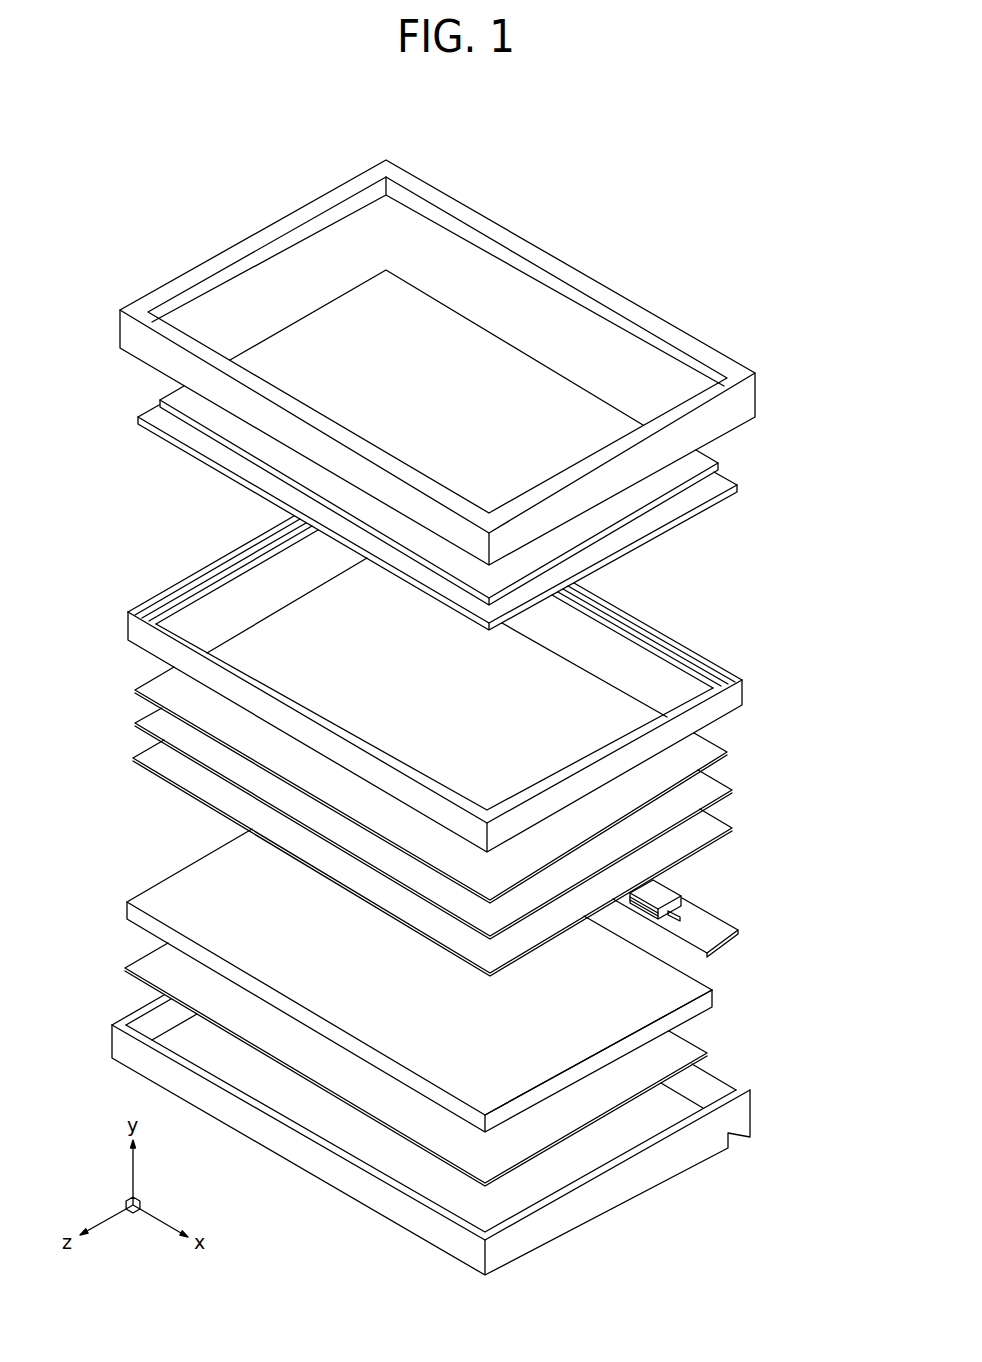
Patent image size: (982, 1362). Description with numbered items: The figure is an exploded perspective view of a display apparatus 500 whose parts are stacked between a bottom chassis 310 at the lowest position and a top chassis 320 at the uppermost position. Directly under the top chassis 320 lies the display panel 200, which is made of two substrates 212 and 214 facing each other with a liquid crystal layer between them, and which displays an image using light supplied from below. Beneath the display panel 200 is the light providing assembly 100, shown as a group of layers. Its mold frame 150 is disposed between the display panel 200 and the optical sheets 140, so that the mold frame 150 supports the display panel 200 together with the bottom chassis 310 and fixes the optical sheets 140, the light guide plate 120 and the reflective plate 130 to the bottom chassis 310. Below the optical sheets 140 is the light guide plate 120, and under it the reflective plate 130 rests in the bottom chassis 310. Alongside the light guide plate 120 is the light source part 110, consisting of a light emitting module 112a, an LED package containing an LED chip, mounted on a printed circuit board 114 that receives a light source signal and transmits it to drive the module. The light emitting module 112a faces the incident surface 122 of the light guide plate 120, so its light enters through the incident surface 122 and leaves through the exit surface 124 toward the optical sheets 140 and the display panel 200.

The display apparatus 500 is at (465, 111).
The top chassis 320 is at (742, 372).
The display panel 200 is at (809, 440).
The substrate 214 is at (702, 458).
The substrate 212 is at (718, 478).
The light providing assembly 100 is at (100, 472).
The mold frame 150 is at (745, 672).
The optical sheets 140 is at (721, 748).
The light source part 110 is at (752, 923).
The light emitting module 112a is at (666, 882).
The printed circuit board 114 is at (717, 932).
The light guide plate 120 is at (727, 1017).
The incident surface 122 is at (714, 992).
The exit surface 124 is at (535, 1072).
The reflective plate 130 is at (478, 1164).
The bottom chassis 310 is at (377, 1197).